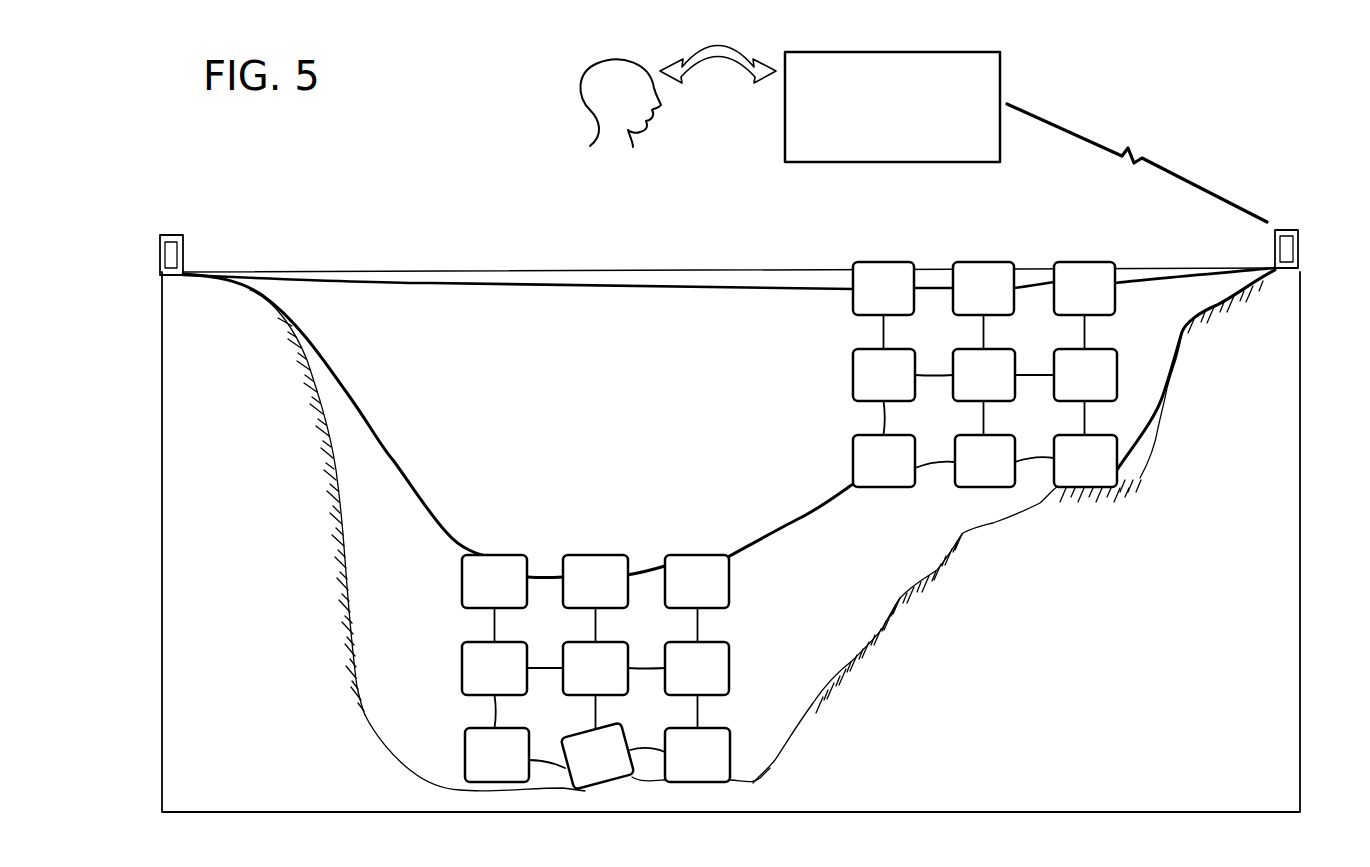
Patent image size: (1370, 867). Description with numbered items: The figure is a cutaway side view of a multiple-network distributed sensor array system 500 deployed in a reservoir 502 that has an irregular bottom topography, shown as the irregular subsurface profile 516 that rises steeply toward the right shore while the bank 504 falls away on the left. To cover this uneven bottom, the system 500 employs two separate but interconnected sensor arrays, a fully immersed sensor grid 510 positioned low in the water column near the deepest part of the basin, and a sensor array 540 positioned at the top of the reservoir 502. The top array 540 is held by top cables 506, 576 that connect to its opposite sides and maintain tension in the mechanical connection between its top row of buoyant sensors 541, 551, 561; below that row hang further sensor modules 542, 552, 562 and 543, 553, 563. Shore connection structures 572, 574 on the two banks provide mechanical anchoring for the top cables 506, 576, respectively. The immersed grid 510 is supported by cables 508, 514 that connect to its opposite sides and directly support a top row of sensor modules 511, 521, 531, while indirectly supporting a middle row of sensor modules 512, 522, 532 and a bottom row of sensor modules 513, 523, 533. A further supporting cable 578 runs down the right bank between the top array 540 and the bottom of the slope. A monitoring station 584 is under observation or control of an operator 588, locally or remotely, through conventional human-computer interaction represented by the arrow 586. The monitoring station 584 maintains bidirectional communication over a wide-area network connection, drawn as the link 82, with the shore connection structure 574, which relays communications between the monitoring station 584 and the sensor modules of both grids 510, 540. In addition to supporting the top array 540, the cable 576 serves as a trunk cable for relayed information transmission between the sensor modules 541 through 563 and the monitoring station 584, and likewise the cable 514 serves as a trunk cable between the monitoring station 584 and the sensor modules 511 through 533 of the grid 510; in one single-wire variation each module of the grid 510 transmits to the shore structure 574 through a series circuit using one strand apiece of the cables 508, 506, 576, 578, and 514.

The communication link 82 is at (1087, 137).
The distributed sensor array system 500 is at (668, 236).
The reservoir 502 is at (539, 384).
The bank / shore 504 is at (262, 506).
The top cable 506 is at (430, 284).
The cable 508 is at (373, 440).
The sensor grid 510 is at (596, 627).
The sensor module 511 is at (474, 594).
The sensor module 512 is at (474, 681).
The sensor module 513 is at (477, 768).
The sensor module 521 is at (575, 594).
The sensor module 522 is at (575, 681).
The sensor module 523 is at (577, 769).
The sensor module 531 is at (677, 594).
The sensor module 532 is at (677, 681).
The sensor module 533 is at (677, 768).
The cable 514 is at (788, 524).
The irregular subsurface profile 516 is at (846, 657).
The sensor array 540 is at (923, 374).
The buoyant sensor 541 is at (863, 301).
The sensor module 542 is at (864, 388).
The sensor module 543 is at (864, 474).
The buoyant sensor 551 is at (963, 301).
The sensor module 552 is at (964, 388).
The sensor module 553 is at (965, 474).
The buoyant sensor 561 is at (1064, 301).
The sensor module 562 is at (1065, 388).
The sensor module 563 is at (1065, 474).
The shore connection structure 572 is at (185, 242).
The shore connection structure 574 is at (1273, 244).
The top cable 576 is at (1146, 280).
The cable 578 is at (1151, 395).
The monitoring station 584 is at (945, 52).
The arrow 586 is at (716, 47).
The operator 588 is at (581, 81).